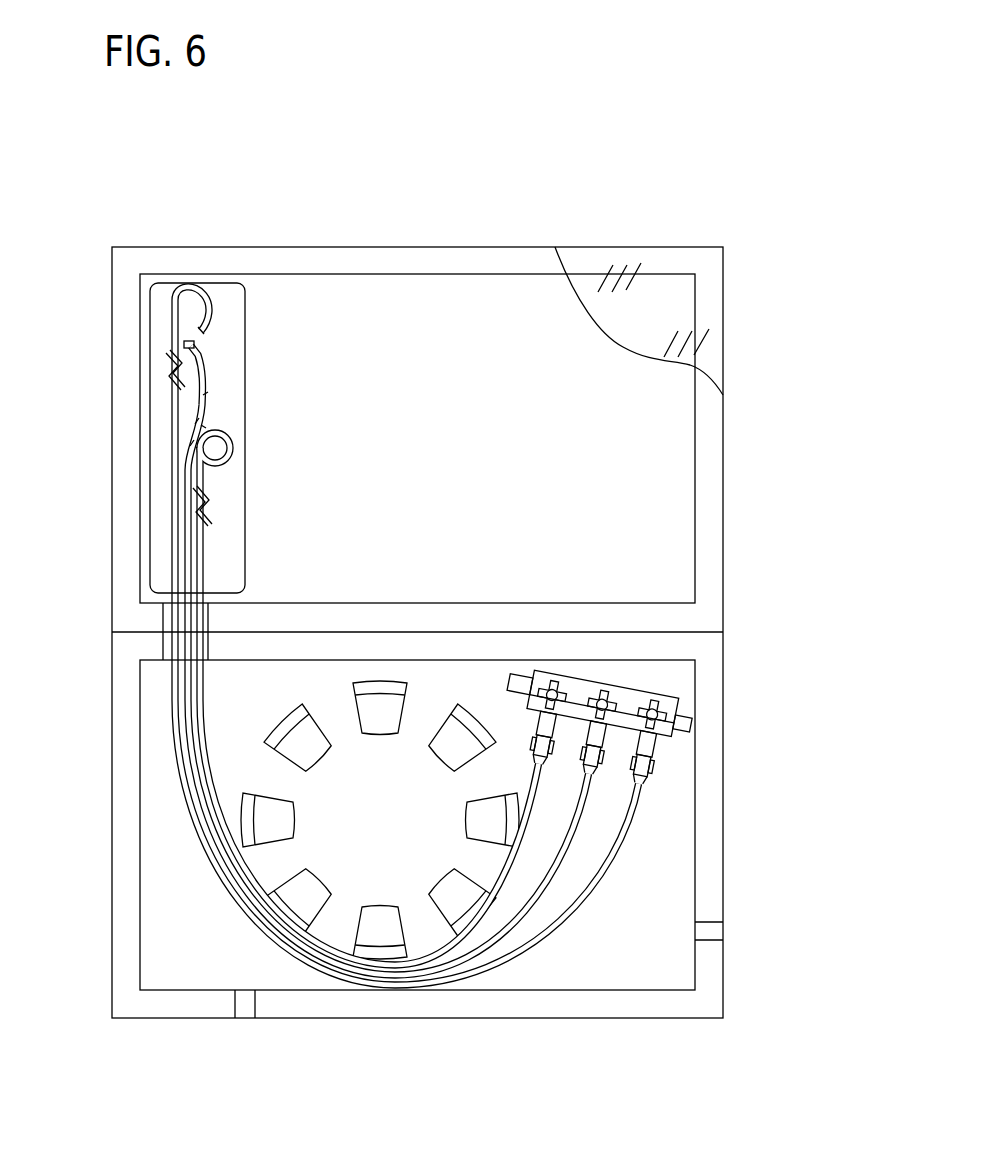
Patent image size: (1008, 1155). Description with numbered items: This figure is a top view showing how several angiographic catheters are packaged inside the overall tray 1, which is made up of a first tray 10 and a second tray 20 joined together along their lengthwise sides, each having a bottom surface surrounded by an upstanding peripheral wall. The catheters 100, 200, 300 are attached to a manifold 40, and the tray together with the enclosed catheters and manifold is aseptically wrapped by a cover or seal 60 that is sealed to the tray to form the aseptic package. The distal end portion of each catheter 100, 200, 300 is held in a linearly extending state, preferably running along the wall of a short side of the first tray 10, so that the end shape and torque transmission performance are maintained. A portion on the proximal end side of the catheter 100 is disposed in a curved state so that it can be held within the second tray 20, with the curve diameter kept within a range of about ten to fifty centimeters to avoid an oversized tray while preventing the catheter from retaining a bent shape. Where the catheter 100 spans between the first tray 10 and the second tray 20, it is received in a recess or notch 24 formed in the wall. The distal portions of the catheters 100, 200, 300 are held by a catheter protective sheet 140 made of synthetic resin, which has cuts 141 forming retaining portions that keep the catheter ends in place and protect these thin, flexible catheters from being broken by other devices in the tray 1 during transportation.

The tray 1 is at (510, 212).
The first tray 10 is at (723, 434).
The second tray 20 is at (723, 816).
The recess or notch 24 is at (163, 623).
The manifold 40 is at (650, 688).
The cover or seal 60 is at (723, 303).
The catheter 100 is at (232, 448).
The catheter protective sheet 140 is at (245, 552).
The cuts 141 is at (166, 374).
The catheter 200 is at (207, 368).
The catheter 300 is at (208, 323).